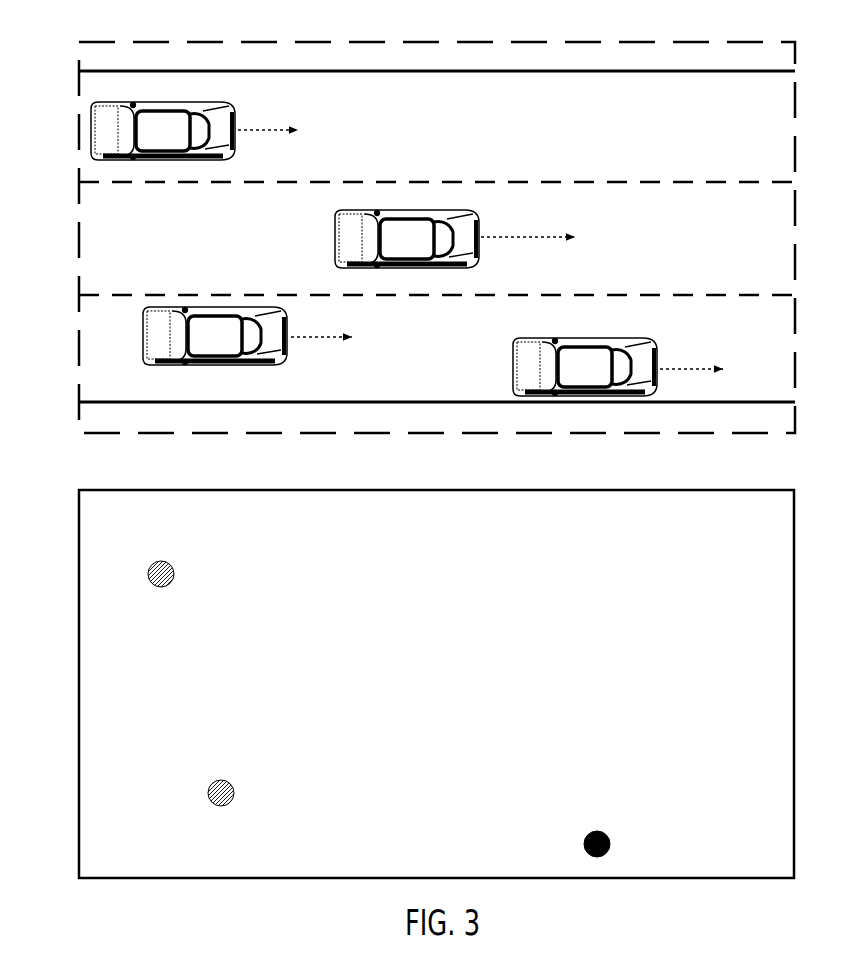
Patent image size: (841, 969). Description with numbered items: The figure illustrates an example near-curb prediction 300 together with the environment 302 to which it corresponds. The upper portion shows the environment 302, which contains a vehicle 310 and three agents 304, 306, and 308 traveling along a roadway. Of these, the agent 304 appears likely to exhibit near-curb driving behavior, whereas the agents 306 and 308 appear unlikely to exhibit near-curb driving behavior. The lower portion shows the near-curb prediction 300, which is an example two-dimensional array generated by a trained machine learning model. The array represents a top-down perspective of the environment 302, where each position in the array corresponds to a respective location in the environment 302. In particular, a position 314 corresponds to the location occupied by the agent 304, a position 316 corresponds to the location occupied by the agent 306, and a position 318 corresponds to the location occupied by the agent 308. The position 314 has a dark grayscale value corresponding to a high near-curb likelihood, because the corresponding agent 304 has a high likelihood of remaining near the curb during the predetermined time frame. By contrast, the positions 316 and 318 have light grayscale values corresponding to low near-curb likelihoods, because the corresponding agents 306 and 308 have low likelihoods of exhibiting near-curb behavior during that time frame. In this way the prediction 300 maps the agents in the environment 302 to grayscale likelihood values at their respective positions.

The near-curb prediction 300 is at (436, 669).
The environment 302 is at (437, 223).
The agent 304 is at (659, 348).
The agent 306 is at (174, 167).
The agent 308 is at (192, 307).
The vehicle 310 is at (423, 206).
The position 314 is at (619, 832).
The position 316 is at (183, 562).
The position 318 is at (248, 771).